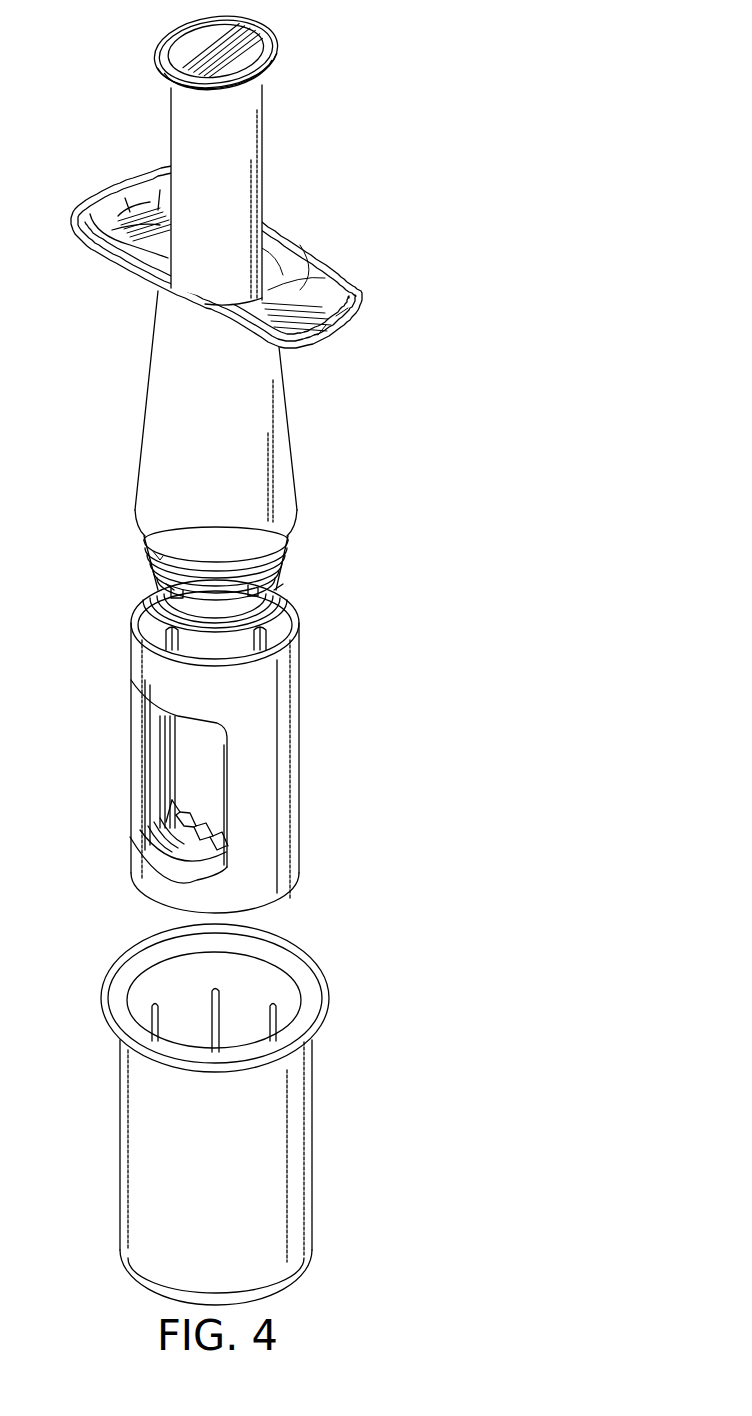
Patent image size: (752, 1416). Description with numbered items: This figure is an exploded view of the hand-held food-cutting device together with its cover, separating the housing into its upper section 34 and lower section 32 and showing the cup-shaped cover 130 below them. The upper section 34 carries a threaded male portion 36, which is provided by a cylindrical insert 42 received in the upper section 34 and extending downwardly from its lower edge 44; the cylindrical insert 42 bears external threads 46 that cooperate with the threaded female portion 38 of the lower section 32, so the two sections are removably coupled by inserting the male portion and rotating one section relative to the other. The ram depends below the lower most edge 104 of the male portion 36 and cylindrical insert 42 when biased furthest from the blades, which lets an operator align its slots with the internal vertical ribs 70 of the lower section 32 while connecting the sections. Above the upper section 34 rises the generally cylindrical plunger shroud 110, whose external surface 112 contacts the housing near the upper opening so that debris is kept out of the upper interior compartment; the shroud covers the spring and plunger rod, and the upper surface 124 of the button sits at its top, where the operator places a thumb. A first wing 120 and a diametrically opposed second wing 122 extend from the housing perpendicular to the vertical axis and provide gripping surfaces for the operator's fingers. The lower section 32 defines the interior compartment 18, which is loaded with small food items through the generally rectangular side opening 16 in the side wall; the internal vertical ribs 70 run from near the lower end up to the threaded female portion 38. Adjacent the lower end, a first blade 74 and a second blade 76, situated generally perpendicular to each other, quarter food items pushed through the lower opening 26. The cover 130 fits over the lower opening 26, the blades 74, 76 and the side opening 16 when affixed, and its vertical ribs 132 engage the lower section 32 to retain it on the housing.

The side opening 16 is at (130, 755).
The interior compartment 18 is at (211, 781).
The lower opening 26 is at (290, 900).
The lower section 32 is at (235, 748).
The upper section 34 is at (238, 427).
The threaded male portion 36 is at (231, 580).
The threaded female portion 38 is at (268, 591).
The cylindrical insert 42 is at (216, 564).
The lower edge 44 is at (140, 522).
The external threads 46 is at (150, 567).
The internal vertical ribs 70 is at (168, 797).
The first blade 74 is at (203, 852).
The second blade 76 is at (187, 827).
The lower most edge 104 is at (157, 575).
The plunger shroud 110 is at (256, 195).
The external surface 112 is at (262, 163).
The first wing 120 is at (238, 257).
The second wing 122 is at (100, 210).
The upper surface 124 is at (243, 24).
The cover 130 is at (264, 1114).
The vertical ribs 132 is at (220, 1005).